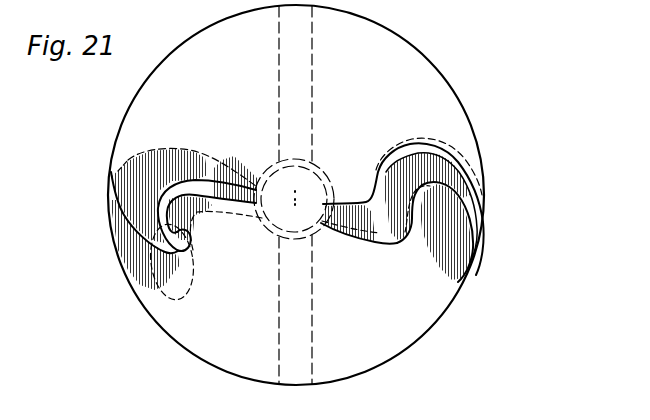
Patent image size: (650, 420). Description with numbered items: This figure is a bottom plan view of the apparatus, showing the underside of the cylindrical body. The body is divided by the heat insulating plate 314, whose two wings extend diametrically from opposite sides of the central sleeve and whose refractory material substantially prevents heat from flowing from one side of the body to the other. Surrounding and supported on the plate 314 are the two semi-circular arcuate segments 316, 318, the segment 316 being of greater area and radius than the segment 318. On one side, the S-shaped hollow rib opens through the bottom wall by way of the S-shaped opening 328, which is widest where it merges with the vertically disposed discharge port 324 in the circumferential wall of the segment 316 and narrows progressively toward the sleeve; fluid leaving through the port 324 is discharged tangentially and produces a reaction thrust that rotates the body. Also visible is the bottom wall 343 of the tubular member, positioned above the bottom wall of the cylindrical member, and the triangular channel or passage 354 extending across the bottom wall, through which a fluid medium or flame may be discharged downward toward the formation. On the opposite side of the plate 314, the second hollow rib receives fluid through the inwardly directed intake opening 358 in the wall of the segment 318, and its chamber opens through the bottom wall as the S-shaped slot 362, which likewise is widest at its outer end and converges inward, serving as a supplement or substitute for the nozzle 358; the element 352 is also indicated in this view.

The heat insulating plate 314 is at (302, 90).
The arcuate segment 316 is at (451, 90).
The arcuate segment 318 is at (132, 278).
The discharge port 324 is at (470, 174).
The S-shaped opening 328 is at (403, 155).
The bottom wall 343 is at (450, 152).
The inner arch wall 352 is at (468, 161).
The channel or passage 354 is at (420, 240).
The intake opening 358 is at (122, 203).
The S-shaped slot 362 is at (172, 188).